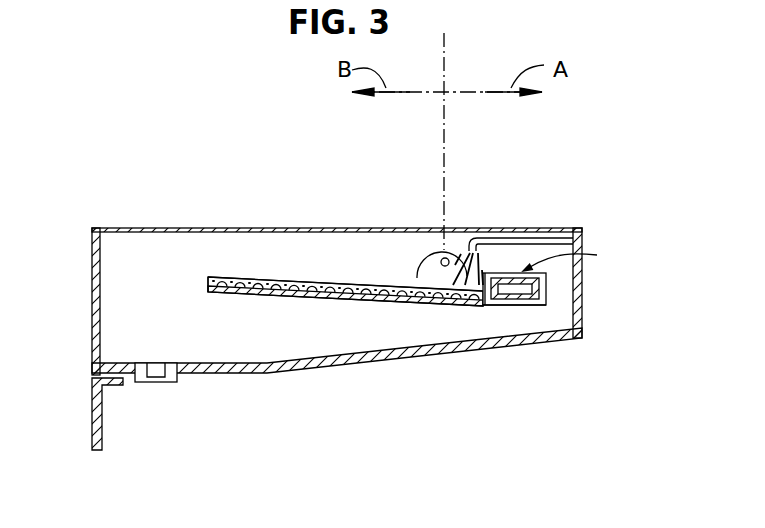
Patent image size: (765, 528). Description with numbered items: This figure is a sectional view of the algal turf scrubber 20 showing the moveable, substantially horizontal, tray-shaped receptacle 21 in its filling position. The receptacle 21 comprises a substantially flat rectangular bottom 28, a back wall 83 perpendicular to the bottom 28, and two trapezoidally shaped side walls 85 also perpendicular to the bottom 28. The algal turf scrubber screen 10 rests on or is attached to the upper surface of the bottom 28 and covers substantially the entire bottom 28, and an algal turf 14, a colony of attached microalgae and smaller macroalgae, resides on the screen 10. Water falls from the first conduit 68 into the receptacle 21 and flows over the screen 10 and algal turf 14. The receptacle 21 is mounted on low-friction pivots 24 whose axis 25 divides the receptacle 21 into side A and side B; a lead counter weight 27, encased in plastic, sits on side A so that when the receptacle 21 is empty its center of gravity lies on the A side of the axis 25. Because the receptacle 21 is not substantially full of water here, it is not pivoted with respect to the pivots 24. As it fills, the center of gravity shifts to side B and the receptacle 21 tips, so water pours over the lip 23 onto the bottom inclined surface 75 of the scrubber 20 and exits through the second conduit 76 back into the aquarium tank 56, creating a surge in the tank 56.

The algal turf scrubber screen 10 is at (380, 283).
The algal turf 14 is at (245, 276).
The algal turf scrubber 20 is at (574, 257).
The receptacle 21 is at (547, 282).
The lip 23 is at (208, 278).
The pivots 24 is at (439, 258).
The axis 25 is at (445, 60).
The counter weight 27 is at (497, 297).
The bottom 28 is at (506, 303).
The aquarium tank 56 is at (96, 400).
The first conduit 68 is at (528, 238).
The bottom inclined surface 75 is at (394, 353).
The second conduit 76 is at (157, 378).
The back wall 83 is at (547, 298).
The side walls 85 is at (303, 282).